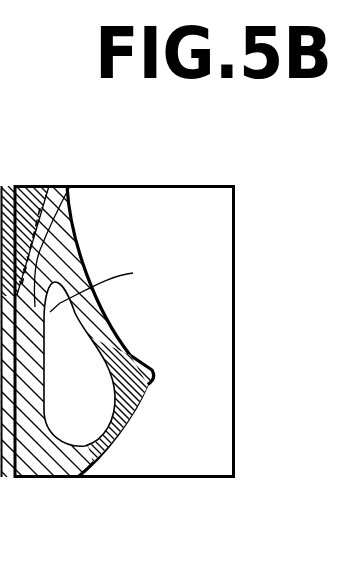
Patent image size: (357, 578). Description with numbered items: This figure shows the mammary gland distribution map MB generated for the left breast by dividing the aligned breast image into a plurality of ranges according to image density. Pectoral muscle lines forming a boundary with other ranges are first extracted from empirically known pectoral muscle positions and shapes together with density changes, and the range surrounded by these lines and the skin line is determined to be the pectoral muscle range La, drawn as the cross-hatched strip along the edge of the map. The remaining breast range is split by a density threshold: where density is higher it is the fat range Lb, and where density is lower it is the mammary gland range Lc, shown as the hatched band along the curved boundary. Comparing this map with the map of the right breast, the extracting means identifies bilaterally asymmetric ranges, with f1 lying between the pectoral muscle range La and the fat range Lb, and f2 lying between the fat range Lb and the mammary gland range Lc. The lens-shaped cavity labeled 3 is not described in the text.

The pectoral muscle range La is at (28, 186).
The fat range Lb is at (79, 246).
The mammary gland range Lc is at (121, 433).
The bilaterally asymmetric range f1 is at (68, 186).
The bilaterally asymmetric range f2 is at (105, 286).
The mammary gland distribution map MB is at (207, 186).
The lens 3 is at (58, 428).